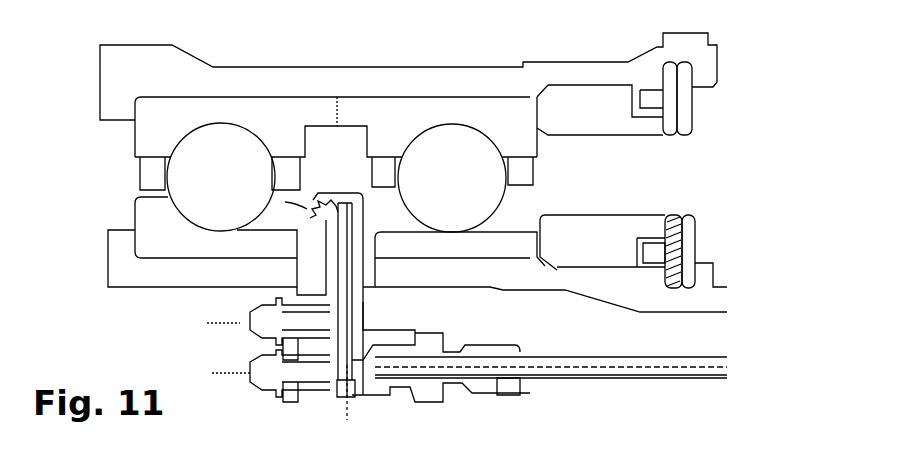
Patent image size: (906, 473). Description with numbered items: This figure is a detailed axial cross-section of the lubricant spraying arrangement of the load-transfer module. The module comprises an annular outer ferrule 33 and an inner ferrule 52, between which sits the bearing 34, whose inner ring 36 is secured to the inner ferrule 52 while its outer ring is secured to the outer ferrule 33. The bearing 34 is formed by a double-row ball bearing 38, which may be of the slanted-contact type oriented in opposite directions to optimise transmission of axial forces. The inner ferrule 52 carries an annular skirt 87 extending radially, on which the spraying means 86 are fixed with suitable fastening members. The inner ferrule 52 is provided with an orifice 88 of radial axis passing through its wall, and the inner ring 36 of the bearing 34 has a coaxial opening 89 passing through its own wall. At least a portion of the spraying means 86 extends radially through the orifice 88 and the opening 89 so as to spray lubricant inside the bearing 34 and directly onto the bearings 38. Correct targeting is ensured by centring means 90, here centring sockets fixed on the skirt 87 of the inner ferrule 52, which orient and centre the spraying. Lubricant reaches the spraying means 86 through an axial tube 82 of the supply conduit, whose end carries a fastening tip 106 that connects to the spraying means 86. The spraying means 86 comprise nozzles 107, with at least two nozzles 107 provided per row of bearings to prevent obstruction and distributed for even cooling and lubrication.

The outer ferrule 33 is at (467, 84).
The bearing 34 is at (352, 137).
The inner ring 36 is at (153, 223).
The ball bearing 38 is at (470, 165).
The inner ferrule 52 is at (163, 268).
The axial tube 82 is at (630, 378).
The spraying means 86 is at (350, 411).
The annular skirt 87 is at (293, 398).
The orifice 88 is at (373, 268).
The opening 89 is at (303, 243).
The centring means 90 is at (280, 335).
The fastening tip 106 is at (500, 397).
The nozzle 107 is at (363, 303).